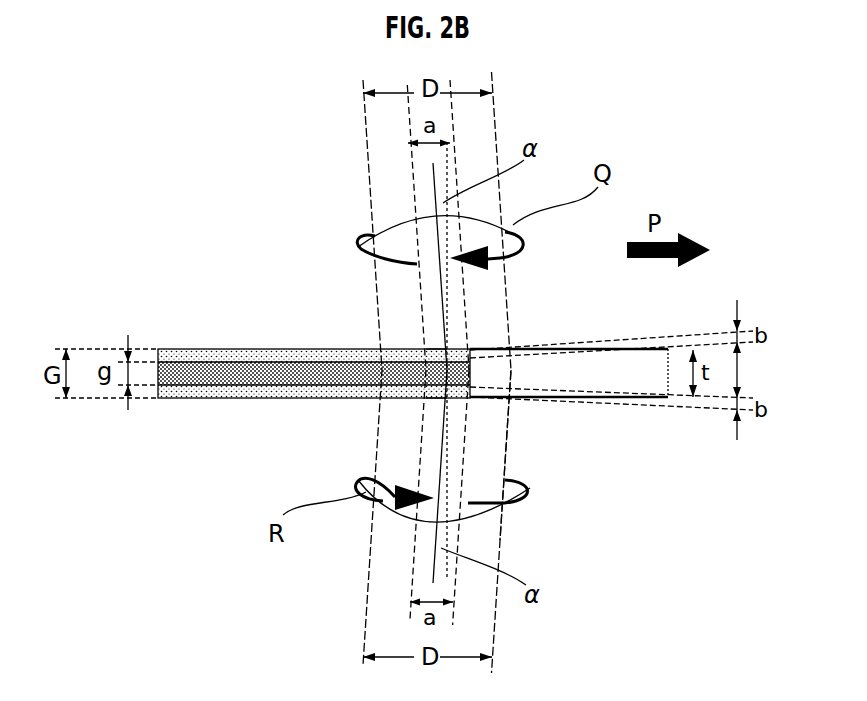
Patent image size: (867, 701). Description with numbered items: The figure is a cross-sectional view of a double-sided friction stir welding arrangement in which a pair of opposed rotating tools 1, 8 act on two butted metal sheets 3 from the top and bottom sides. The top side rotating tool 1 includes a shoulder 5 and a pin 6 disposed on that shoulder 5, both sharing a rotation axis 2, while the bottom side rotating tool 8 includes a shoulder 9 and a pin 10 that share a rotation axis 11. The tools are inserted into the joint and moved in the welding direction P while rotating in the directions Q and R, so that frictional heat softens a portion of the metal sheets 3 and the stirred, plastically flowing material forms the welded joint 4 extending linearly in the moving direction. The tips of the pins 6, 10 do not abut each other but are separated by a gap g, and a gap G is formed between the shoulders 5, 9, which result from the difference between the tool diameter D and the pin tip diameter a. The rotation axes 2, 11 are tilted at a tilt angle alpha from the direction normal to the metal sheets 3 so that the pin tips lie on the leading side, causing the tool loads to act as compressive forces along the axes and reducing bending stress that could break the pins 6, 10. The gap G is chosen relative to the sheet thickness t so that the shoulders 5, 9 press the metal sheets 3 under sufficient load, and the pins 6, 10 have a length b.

The top side rotating tool 1 is at (504, 277).
The rotation axis 2 is at (437, 193).
The metal sheets 3 is at (637, 357).
The welded joint 4 is at (230, 352).
The shoulder 5 is at (490, 349).
The pin 6 is at (437, 348).
The bottom side rotating tool 8 is at (498, 460).
The shoulder 9 is at (490, 397).
The pin 10 is at (433, 396).
The rotation axis 11 is at (437, 562).